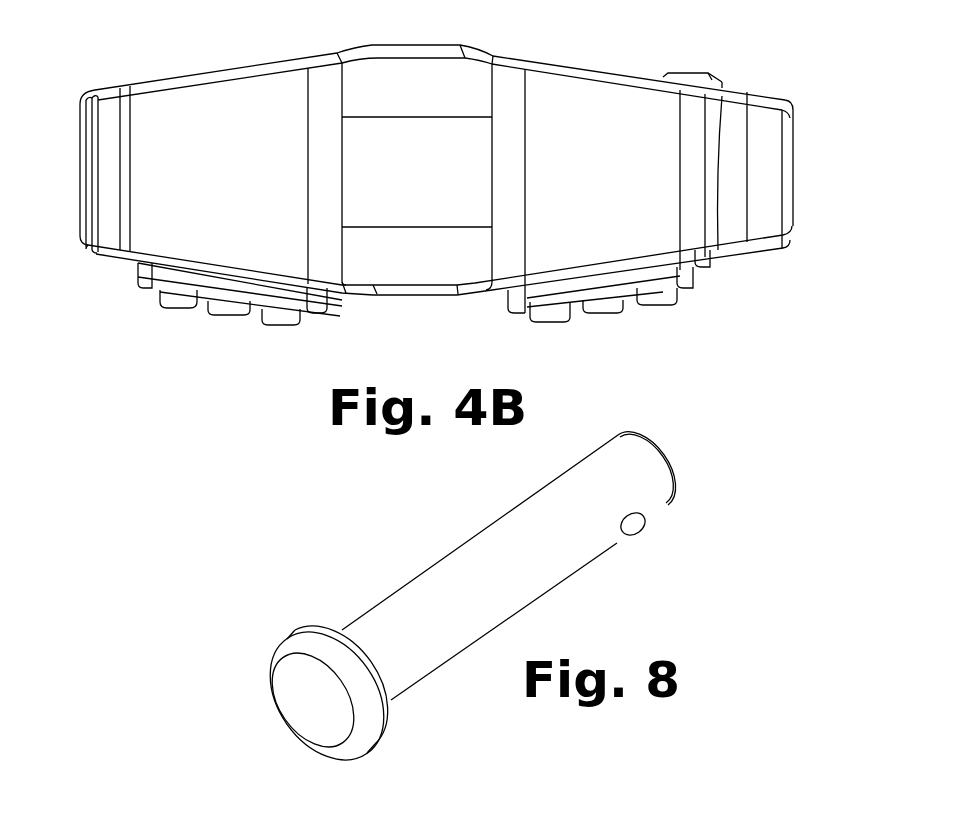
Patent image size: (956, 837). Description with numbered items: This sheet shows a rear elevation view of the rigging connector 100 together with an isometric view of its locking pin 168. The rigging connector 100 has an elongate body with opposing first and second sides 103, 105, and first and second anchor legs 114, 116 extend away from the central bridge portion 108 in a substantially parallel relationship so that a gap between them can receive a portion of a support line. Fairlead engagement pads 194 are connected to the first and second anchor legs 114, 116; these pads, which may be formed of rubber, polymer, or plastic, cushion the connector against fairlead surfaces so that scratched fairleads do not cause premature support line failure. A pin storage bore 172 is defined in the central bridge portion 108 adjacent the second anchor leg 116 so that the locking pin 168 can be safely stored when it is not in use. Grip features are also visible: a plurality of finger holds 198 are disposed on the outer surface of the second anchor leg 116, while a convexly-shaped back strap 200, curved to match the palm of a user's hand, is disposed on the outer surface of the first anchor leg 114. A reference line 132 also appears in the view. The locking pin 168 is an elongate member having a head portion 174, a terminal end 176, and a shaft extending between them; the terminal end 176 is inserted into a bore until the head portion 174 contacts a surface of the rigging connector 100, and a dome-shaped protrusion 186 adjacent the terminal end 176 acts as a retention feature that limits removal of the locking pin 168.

In FIG. 4B, the rigging connector 100 is at (176, 48).
In FIG. 4B, the finger holds 198 is at (82, 147).
In FIG. 4B, the first side 103 is at (60, 196).
In FIG. 4B, the second anchor leg 116 is at (192, 238).
In FIG. 4B, the central compartment 132 is at (440, 225).
In FIG. 4B, the central bridge portion 108 is at (397, 260).
In FIG. 4B, the fairlead engagement pads 194 is at (233, 311).
In FIG. 4B, the first anchor leg 114 is at (627, 242).
In FIG. 4B, the second side 105 is at (803, 208).
In FIG. 4B, the pin storage bore 172 is at (722, 80).
In FIG. 4B, the back strap 200 is at (793, 148).
In FIG. 8, the locking pin 168 is at (401, 546).
In FIG. 8, the terminal end 176 is at (655, 474).
In FIG. 8, the head portion 174 is at (292, 642).
In FIG. 8, the dome-shaped protrusion 186 is at (637, 527).